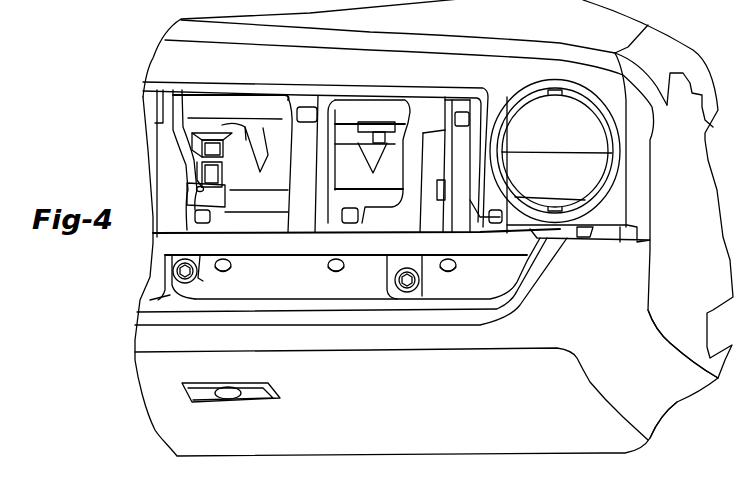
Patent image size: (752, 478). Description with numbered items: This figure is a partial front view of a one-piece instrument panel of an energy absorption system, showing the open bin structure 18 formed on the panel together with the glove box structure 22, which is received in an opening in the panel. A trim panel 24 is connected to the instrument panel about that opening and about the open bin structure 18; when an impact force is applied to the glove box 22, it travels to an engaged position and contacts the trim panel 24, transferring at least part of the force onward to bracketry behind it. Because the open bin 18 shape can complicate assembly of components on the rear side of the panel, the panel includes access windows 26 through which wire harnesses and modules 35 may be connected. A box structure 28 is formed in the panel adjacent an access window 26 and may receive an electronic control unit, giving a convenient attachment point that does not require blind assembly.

The open bin structure 18 is at (502, 278).
The glove box structure 22 is at (418, 413).
The trim panel 24 is at (642, 376).
The access window 26 is at (263, 93).
The box structure 28 is at (428, 153).
The wire harnesses and modules 35 is at (195, 130).